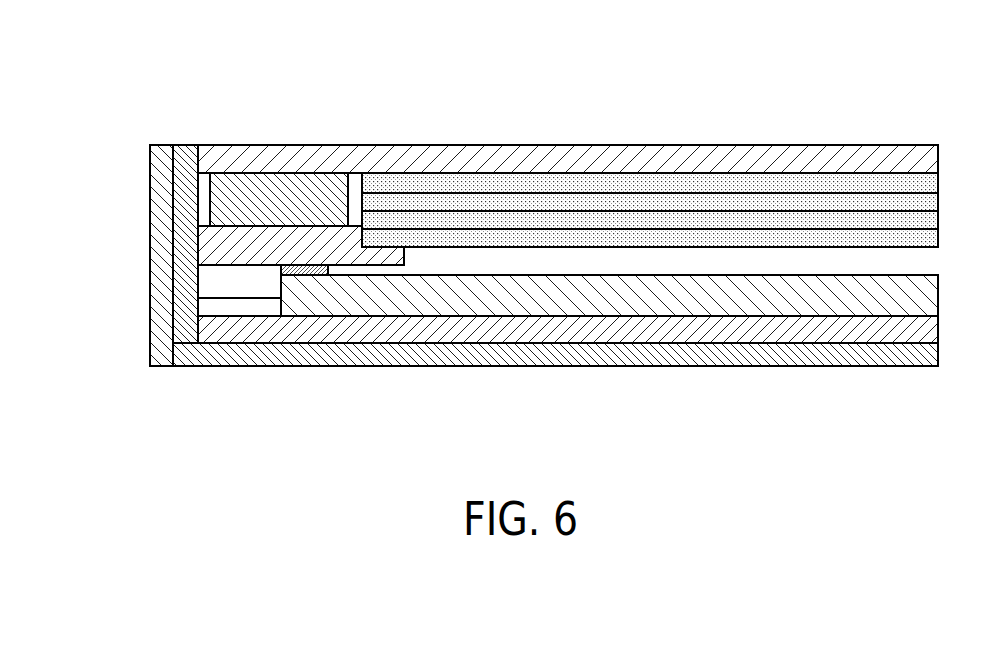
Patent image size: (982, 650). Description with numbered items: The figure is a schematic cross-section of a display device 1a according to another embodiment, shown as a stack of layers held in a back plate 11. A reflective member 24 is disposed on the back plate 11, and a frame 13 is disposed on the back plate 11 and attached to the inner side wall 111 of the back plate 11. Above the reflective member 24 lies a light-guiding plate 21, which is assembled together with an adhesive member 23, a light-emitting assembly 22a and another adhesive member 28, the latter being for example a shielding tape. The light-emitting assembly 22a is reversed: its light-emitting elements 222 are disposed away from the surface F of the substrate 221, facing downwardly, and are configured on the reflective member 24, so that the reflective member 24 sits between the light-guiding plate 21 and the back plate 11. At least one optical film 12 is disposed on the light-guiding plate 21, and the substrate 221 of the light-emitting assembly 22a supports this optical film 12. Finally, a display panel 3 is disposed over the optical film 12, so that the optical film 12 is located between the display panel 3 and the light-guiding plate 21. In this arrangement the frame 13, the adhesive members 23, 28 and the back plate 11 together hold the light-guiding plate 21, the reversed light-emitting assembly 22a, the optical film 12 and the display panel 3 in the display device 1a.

The display device 1a is at (230, 72).
The display panel 3 is at (923, 159).
The back plate 11 is at (781, 355).
The inner side wall 111 is at (173, 310).
The optical film 12 is at (945, 174).
The frame 13 is at (185, 145).
The light-guiding plate 21 is at (920, 289).
The light-emitting assembly 22a is at (106, 236).
The substrate 221 is at (217, 247).
The light-emitting elements 222 is at (208, 283).
The adhesive member 23 is at (305, 270).
The reflective member 24 is at (918, 333).
The adhesive member 28 is at (232, 190).
The surface F is at (248, 298).